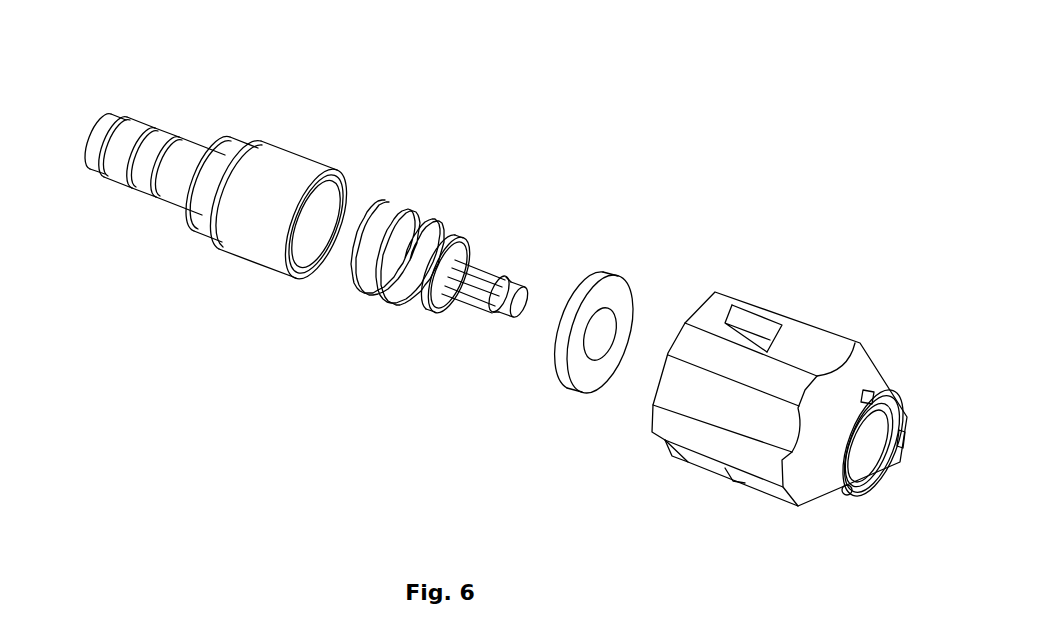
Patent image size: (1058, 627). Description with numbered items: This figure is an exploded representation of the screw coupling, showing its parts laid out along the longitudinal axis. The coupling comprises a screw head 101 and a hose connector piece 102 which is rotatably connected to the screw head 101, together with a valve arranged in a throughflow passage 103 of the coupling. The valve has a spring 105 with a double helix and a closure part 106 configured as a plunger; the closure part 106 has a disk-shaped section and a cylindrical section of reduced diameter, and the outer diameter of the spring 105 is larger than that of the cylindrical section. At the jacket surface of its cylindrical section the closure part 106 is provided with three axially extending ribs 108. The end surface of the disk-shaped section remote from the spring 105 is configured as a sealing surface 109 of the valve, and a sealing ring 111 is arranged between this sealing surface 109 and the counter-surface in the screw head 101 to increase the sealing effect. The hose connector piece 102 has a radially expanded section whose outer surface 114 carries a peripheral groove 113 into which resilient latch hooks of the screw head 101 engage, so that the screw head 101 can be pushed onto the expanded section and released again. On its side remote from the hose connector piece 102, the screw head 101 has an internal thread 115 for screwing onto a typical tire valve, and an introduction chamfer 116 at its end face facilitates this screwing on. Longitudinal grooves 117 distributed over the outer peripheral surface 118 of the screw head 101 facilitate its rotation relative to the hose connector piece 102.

The screw head 101 is at (802, 368).
The hose connector piece 102 is at (239, 197).
The throughflow passage 103 is at (327, 213).
The spring 105 is at (428, 230).
The closure part 106 is at (471, 252).
The ribs 108 is at (483, 270).
The sealing surface 109 is at (468, 252).
The sealing ring 111 is at (563, 365).
The peripheral groove 113 is at (252, 158).
The outer surface 114 is at (265, 228).
The internal thread 115 is at (863, 452).
The introduction chamfer 116 is at (893, 408).
The longitudinal grooves 117 is at (728, 410).
The outer peripheral surface 118 is at (755, 303).